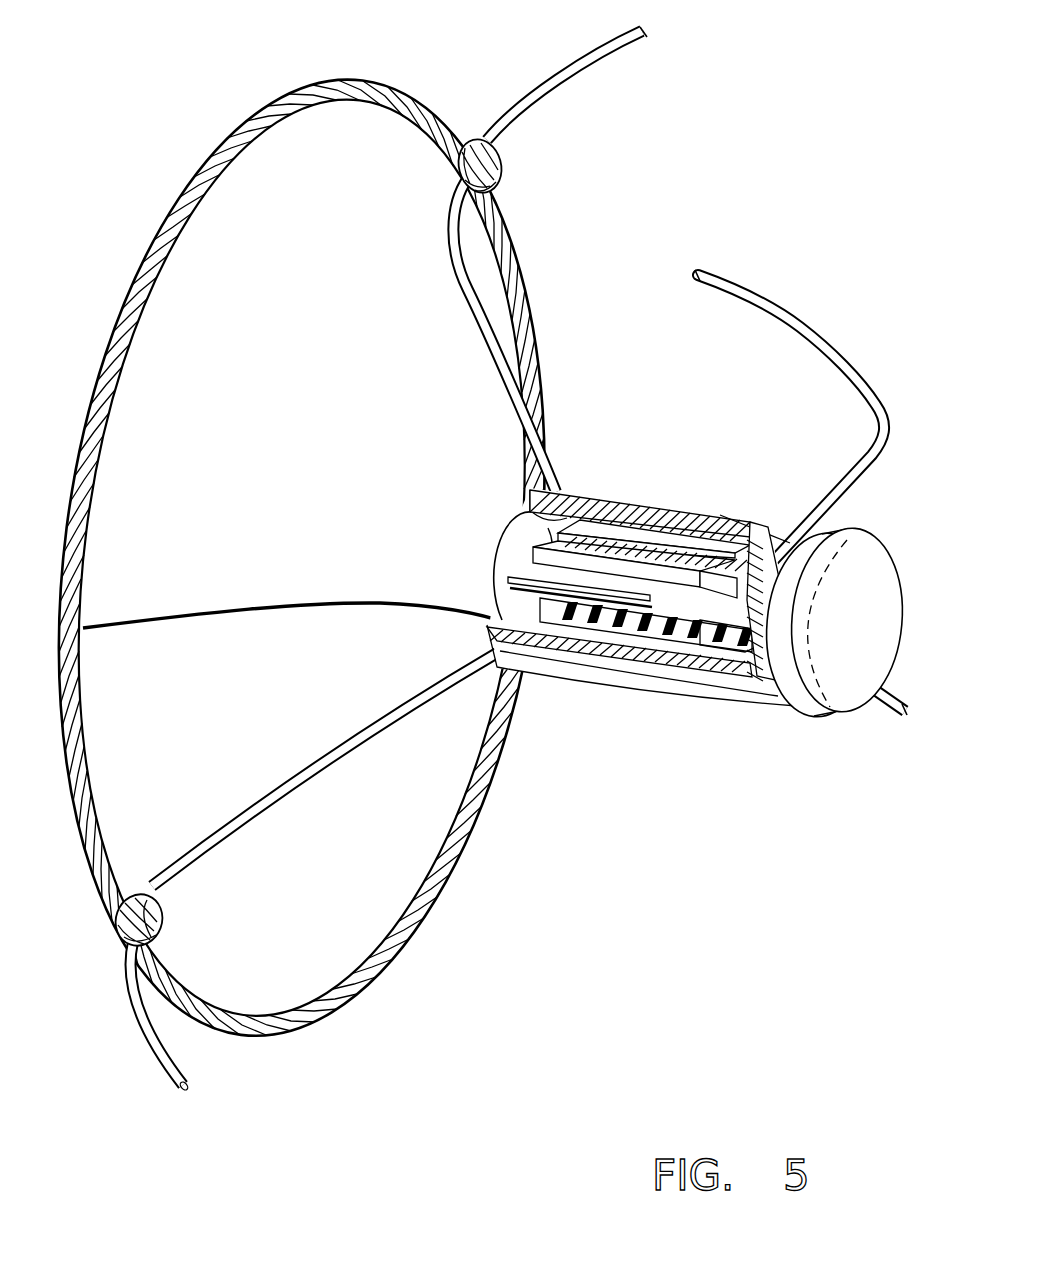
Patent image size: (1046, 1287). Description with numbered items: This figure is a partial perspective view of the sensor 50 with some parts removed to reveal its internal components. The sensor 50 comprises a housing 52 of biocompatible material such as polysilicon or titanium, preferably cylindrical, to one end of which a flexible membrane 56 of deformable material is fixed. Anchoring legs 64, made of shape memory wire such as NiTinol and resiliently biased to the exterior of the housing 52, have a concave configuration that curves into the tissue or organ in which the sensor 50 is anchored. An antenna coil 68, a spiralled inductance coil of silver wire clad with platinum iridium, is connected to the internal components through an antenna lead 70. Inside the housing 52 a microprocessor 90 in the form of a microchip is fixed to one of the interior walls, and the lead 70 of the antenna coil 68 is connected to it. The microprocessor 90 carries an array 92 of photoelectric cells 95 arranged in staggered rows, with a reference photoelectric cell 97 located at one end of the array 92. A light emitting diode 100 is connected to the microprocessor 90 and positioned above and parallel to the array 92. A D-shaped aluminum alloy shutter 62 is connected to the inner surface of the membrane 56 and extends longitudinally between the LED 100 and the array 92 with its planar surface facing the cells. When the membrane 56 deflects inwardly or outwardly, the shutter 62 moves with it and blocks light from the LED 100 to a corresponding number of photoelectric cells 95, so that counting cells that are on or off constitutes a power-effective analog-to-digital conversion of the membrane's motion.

The sensor 50 is at (735, 178).
The housing 52 is at (630, 673).
The flexible membrane 56 is at (527, 552).
The shutter 62 is at (688, 598).
The anchoring legs 64 is at (535, 105).
The antenna coil 68 is at (108, 412).
The antenna lead 70 is at (148, 617).
The microprocessor 90 is at (615, 633).
The array of photoelectric cells 92 is at (526, 606).
The photoelectric cells 95 is at (643, 625).
The reference photoelectric cell 97 is at (742, 645).
The light emitting diode 100 is at (640, 572).